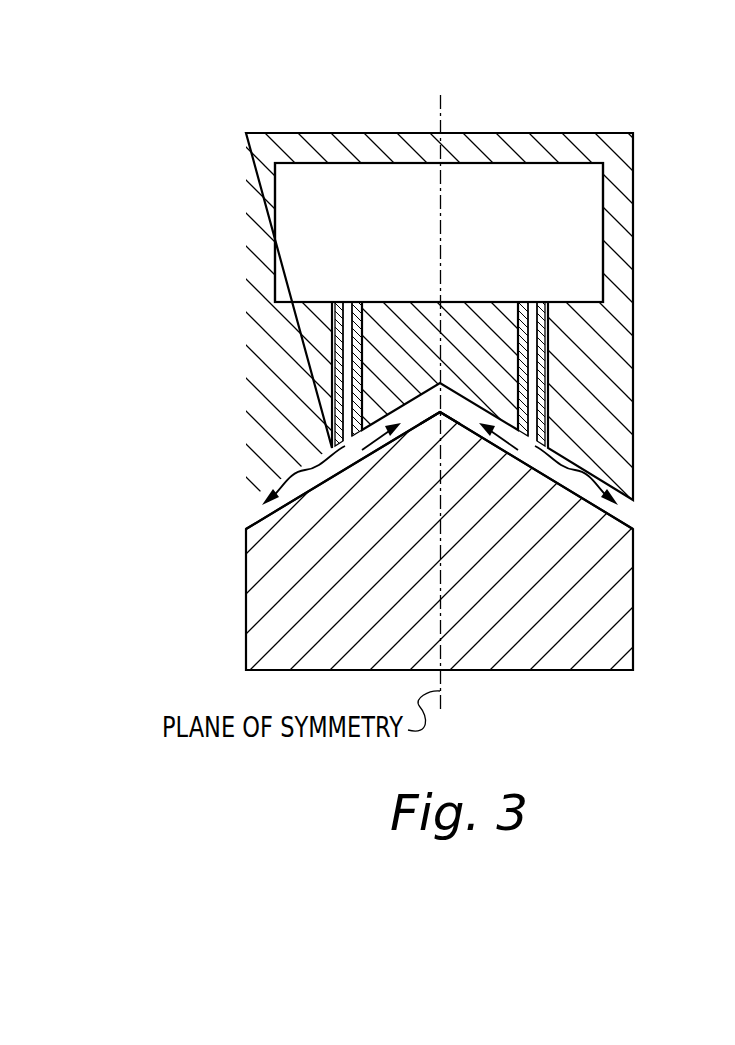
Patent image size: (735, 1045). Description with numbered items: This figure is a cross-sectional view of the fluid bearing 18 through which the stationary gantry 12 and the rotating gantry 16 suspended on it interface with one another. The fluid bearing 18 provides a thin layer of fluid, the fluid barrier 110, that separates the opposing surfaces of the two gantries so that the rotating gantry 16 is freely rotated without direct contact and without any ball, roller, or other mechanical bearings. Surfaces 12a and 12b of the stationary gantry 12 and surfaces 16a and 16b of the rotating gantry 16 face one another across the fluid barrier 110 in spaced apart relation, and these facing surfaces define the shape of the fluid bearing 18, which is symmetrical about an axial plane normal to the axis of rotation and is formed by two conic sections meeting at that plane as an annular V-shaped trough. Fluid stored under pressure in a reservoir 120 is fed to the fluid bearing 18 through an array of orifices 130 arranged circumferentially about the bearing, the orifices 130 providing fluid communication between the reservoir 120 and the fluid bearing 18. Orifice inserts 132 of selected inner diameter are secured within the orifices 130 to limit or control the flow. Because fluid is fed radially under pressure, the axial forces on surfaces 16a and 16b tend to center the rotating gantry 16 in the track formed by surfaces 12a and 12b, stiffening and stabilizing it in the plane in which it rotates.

The stationary gantry 12 is at (435, 293).
The surface of the stationary gantry 12a is at (292, 460).
The surface of the stationary gantry 12b is at (622, 432).
The reservoir 120 is at (373, 213).
The orifices 130 is at (340, 350).
The orifice inserts 132 is at (337, 412).
The rotating gantry 16 is at (441, 565).
The surface of the rotating gantry 16a is at (326, 492).
The surface of the rotating gantry 16b is at (555, 496).
The fluid barrier 110 is at (472, 418).
The fluid bearing 18 is at (240, 524).